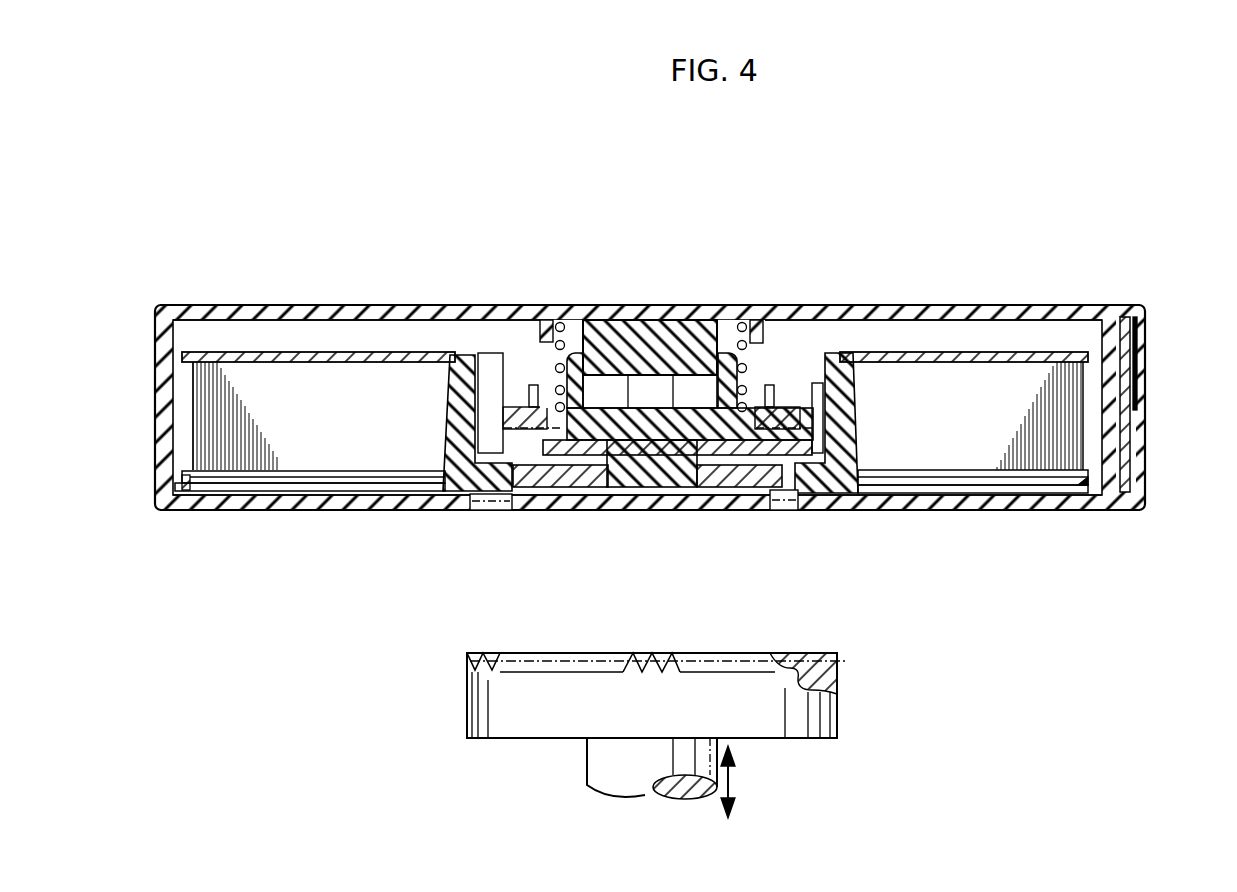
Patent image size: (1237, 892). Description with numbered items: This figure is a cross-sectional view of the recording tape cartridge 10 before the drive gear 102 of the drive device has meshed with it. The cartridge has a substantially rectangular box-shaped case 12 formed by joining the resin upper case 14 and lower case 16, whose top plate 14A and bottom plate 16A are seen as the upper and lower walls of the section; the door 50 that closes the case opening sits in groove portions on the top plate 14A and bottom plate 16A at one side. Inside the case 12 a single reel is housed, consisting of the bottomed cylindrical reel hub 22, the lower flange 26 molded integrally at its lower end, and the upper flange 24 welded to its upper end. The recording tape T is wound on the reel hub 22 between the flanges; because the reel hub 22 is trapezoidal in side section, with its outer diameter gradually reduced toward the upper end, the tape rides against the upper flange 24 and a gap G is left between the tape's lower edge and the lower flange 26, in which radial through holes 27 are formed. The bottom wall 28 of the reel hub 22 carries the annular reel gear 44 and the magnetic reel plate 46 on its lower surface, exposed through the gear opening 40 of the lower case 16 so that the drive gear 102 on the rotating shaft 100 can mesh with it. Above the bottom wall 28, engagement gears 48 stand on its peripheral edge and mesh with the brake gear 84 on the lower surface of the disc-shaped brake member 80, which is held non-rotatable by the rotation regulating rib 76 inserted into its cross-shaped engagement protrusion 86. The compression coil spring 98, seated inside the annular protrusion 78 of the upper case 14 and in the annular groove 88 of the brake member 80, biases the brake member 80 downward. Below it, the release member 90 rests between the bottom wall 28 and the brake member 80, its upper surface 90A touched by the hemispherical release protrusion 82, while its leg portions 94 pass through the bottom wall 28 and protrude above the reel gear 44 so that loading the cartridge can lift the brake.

The recording tape cartridge 10 is at (1095, 272).
The case 12 is at (1146, 447).
The upper case 14 is at (650, 287).
The top plate 14A is at (945, 305).
The lower case 16 is at (650, 535).
The bottom plate 16A is at (938, 510).
The reel hub 22 is at (853, 407).
The upper flange 24 is at (292, 352).
The lower flange 26 is at (270, 483).
The through holes 27 is at (1063, 480).
The bottom wall 28 is at (650, 433).
The gear opening 40 is at (468, 508).
The reel gear 44 is at (492, 500).
The reel plate 46 is at (735, 480).
The engagement gears 48 is at (503, 423).
The door 50 is at (1143, 340).
The rotation regulating rib 76 is at (716, 345).
The annular protrusion 78 is at (765, 338).
The brake member 80 is at (511, 404).
The release protrusion 82 is at (630, 477).
The brake gear 84 is at (772, 428).
The engagement protrusion 86 is at (743, 365).
The annular groove 88 is at (790, 398).
The release member 90 is at (812, 420).
The upper surface of release member 90A is at (573, 443).
The leg portions 94 is at (808, 507).
The compression coil spring 98 is at (567, 350).
The rotating shaft 100 is at (587, 761).
The drive gear 102 is at (820, 655).
The gap G is at (192, 470).
The recording tape T is at (1072, 395).